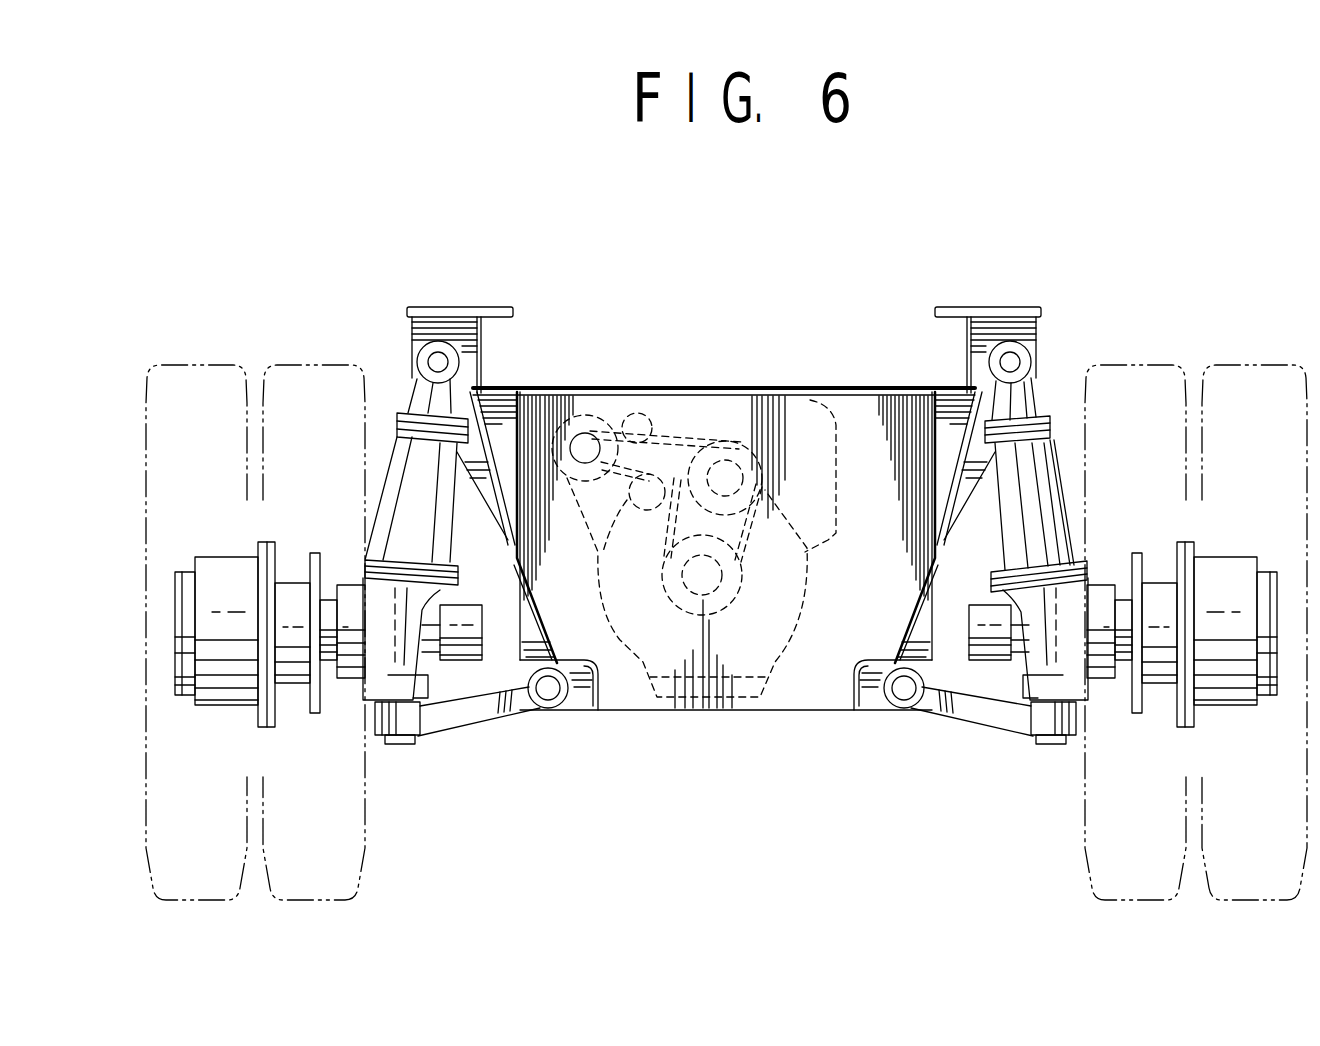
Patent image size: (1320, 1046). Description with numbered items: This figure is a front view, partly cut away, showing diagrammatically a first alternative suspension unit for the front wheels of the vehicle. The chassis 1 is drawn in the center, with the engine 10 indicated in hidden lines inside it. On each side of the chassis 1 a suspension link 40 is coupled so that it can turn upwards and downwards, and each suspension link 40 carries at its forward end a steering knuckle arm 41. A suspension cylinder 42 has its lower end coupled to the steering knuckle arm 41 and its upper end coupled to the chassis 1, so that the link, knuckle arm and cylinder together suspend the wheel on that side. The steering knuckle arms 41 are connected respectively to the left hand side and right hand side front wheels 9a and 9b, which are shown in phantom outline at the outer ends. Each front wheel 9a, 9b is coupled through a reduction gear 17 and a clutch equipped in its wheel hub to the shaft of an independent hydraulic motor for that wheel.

The chassis 1 is at (852, 398).
The left hand side front wheel 9a is at (294, 374).
The right hand side front wheel 9b is at (1214, 374).
The engine 10 is at (806, 487).
The reduction gear 17 is at (202, 558).
The suspension link 40 is at (487, 708).
The steering knuckle arm 41 is at (378, 597).
The suspension cylinder 42 is at (400, 497).